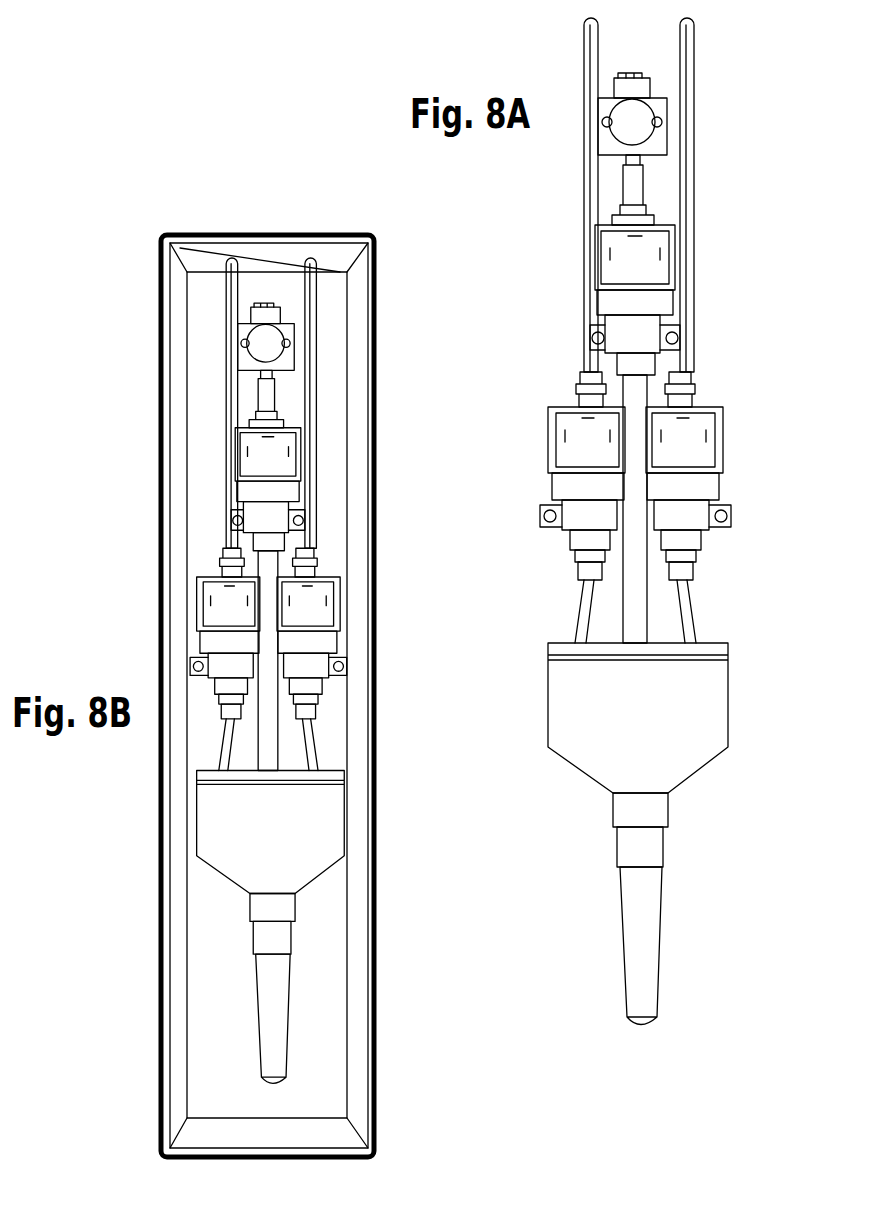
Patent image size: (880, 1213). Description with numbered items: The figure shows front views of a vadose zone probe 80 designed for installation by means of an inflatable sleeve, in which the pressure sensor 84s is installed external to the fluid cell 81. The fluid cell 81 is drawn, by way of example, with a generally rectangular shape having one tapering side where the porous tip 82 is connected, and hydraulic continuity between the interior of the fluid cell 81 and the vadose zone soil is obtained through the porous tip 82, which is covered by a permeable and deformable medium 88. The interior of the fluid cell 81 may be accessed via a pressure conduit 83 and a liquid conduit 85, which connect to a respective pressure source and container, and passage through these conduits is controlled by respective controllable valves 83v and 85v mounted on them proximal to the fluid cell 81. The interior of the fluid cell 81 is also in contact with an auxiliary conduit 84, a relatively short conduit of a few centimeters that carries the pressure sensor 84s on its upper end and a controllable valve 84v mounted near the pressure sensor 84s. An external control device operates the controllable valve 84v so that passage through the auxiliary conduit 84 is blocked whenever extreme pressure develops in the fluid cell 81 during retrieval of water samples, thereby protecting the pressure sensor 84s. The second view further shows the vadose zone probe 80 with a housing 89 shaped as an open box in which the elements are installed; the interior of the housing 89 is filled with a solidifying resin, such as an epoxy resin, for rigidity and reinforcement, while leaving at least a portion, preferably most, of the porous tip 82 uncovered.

In FIG. 8A, the vadose zone probe 80 is at (538, 193).
In FIG. 8B, the vadose zone probe 80 is at (200, 428).
In FIG. 8A, the fluid cell 81 is at (707, 738).
In FIG. 8B, the fluid cell 81 is at (303, 822).
In FIG. 8A, the porous tip 82 is at (620, 947).
In FIG. 8B, the porous tip 82 is at (258, 975).
In FIG. 8A, the pressure conduit 83 is at (693, 97).
In FIG. 8B, the pressure conduit 83 is at (316, 283).
In FIG. 8A, the controllable valve 83v is at (725, 460).
In FIG. 8B, the controllable valve 83v is at (312, 659).
In FIG. 8A, the auxiliary conduit 84 is at (647, 602).
In FIG. 8B, the auxiliary conduit 84 is at (282, 708).
In FIG. 8A, the pressure sensor 84s is at (665, 138).
In FIG. 8B, the pressure sensor 84s is at (266, 365).
In FIG. 8A, the controllable valve 84v is at (665, 275).
In FIG. 8B, the controllable valve 84v is at (268, 489).
In FIG. 8A, the liquid conduit 85 is at (586, 80).
In FIG. 8B, the liquid conduit 85 is at (230, 307).
In FIG. 8A, the controllable valve 85v is at (550, 437).
In FIG. 8B, the controllable valve 85v is at (225, 659).
In FIG. 8B, the permeable and deformable medium 88 is at (203, 498).
In FIG. 8B, the housing 89 is at (205, 233).